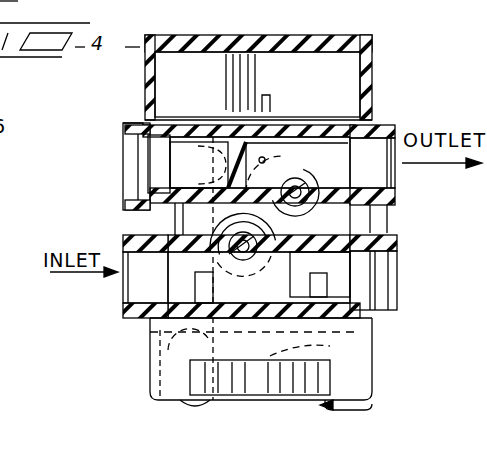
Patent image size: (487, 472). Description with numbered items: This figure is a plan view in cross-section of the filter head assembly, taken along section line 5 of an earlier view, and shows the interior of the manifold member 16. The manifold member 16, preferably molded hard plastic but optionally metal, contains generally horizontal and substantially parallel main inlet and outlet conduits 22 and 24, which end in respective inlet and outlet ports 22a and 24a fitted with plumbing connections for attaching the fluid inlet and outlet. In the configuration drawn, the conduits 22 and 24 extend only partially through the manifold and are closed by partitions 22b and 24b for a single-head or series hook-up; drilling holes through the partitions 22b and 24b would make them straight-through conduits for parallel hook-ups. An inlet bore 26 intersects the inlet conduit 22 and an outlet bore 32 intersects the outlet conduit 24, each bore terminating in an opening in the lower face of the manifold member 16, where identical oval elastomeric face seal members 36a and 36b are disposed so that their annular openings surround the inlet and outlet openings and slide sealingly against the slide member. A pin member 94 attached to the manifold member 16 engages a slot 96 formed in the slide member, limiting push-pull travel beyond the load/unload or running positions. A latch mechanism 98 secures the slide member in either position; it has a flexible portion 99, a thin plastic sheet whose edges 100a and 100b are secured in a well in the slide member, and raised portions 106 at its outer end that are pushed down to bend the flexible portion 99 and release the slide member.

The section line 5 is at (88, 10).
The manifold member 16 is at (145, 124).
The main inlet conduit 22 is at (150, 291).
The inlet port 22a is at (130, 248).
The partition 22b is at (275, 318).
The main outlet conduit 24 is at (365, 138).
The outlet port 24a is at (392, 190).
The partition 24b is at (272, 120).
The inlet bore 26 is at (242, 249).
The outlet bore 32 is at (303, 188).
The face seal member 36a is at (182, 343).
The face seal member 36b is at (318, 162).
The pin member 94 is at (124, 182).
The slot 96 is at (193, 147).
The latch mechanism 98 is at (333, 405).
The flexible portion 99 is at (282, 354).
The edge 100a is at (160, 356).
The edge 100b is at (338, 345).
The raised portion 106 is at (273, 395).